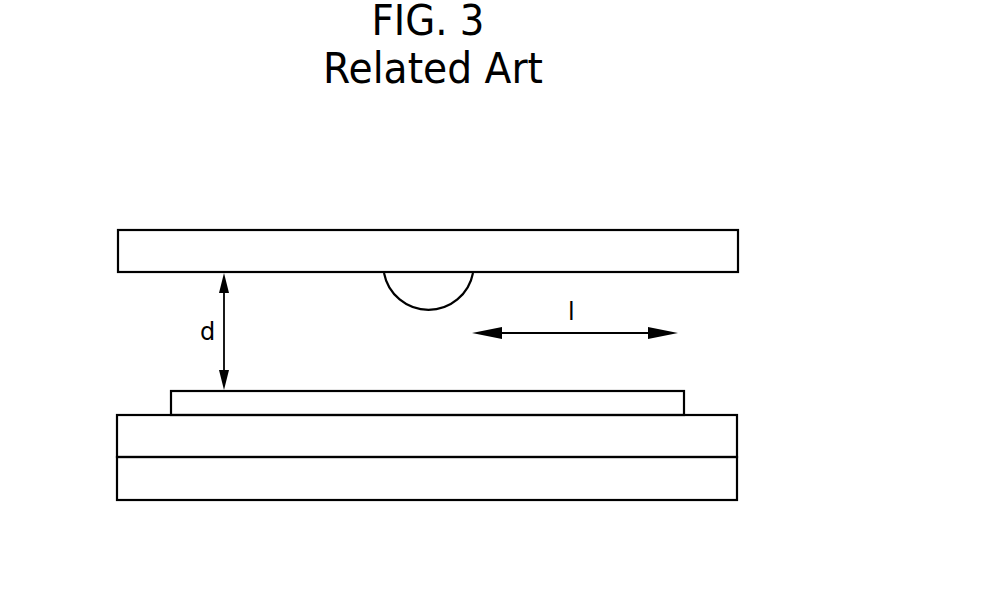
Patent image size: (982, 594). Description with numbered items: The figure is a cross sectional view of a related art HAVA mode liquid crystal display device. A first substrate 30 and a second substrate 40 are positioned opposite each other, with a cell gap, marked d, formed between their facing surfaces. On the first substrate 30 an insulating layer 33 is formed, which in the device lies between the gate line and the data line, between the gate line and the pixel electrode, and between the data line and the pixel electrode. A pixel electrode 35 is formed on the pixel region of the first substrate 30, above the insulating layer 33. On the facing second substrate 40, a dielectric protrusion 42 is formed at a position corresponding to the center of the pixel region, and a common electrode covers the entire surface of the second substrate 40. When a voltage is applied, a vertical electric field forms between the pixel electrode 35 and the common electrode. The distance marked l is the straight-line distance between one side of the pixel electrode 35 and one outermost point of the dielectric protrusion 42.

The second substrate 40 is at (708, 253).
The dielectric protrusion 42 is at (434, 292).
The pixel electrode 35 is at (668, 404).
The insulating layer 33 is at (712, 442).
The first substrate 30 is at (712, 485).